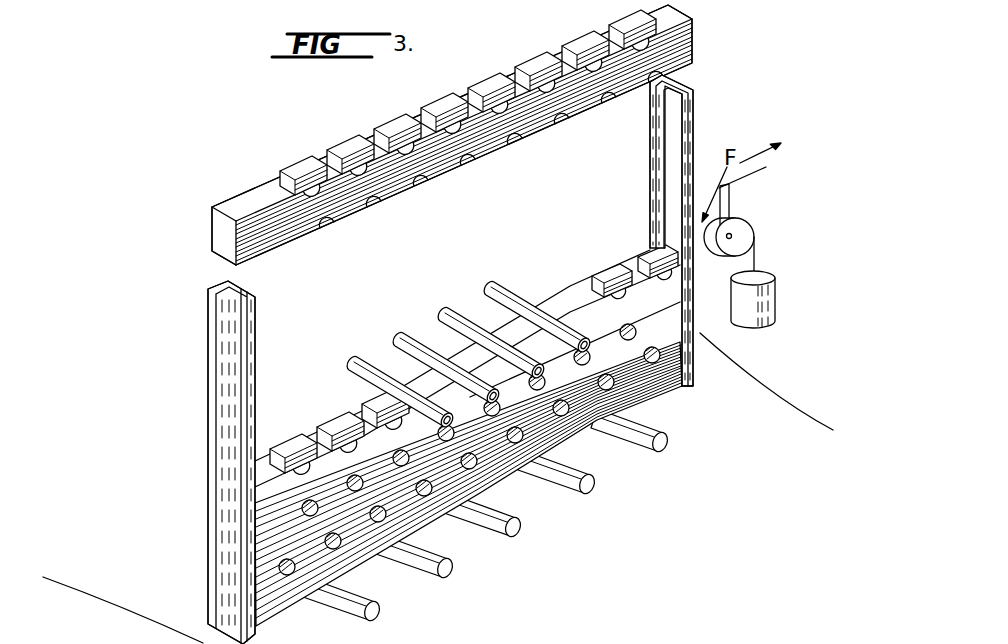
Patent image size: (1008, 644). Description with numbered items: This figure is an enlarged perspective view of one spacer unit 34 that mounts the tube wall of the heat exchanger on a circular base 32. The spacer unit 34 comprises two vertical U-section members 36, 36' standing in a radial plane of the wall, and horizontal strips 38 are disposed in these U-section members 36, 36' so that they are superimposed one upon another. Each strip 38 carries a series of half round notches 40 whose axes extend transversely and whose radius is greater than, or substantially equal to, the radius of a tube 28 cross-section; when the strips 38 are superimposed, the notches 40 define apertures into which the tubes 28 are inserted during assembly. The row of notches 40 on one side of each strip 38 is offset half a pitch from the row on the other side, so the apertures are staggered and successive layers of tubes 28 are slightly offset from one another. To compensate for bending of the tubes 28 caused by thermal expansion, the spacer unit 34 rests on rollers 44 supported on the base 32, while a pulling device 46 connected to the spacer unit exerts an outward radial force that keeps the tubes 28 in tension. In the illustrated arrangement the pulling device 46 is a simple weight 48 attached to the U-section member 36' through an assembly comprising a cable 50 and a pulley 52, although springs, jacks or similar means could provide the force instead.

The tube 28 is at (446, 318).
The circular base 32 is at (672, 518).
The spacer unit 34 is at (201, 462).
The vertical U-section member 36 is at (210, 462).
The vertical U-section member 36' is at (698, 230).
The strip 38 is at (236, 198).
The half round notch 40 is at (344, 181).
The roller 44 is at (516, 536).
The pulling device 46 is at (774, 247).
The weight 48 is at (774, 299).
The cable 50 is at (757, 249).
The pulley 52 is at (745, 221).